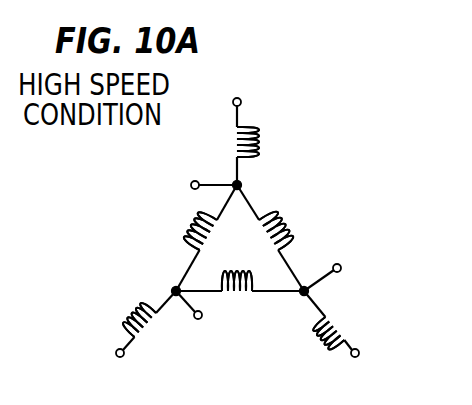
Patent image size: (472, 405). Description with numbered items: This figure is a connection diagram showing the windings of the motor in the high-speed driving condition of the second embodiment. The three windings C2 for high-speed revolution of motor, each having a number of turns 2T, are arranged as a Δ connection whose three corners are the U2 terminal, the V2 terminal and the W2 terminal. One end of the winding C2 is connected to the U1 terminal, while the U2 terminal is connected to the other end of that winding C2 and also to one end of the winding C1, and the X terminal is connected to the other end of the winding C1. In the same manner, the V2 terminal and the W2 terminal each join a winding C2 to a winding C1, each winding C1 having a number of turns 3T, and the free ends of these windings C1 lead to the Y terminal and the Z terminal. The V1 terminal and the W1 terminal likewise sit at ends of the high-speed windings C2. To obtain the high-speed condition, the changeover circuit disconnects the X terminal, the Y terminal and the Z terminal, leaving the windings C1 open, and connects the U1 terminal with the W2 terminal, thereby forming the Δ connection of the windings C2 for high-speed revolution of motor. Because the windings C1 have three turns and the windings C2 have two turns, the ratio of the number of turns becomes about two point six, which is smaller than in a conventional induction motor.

The winding C1 is at (217, 240).
The winding for high-speed revolution of motor C2 is at (237, 269).
The number of turns of winding C1 3T is at (246, 240).
The number of turns of winding for high-speed revolution of motor 2T is at (238, 252).
The Z terminal Z is at (237, 87).
The X terminal X is at (118, 370).
The Y terminal Y is at (365, 370).
The U1 terminal U1 is at (198, 185).
The V1 terminal V1 is at (195, 322).
The W1 terminal W1 is at (339, 268).
The U2 terminal U2 is at (159, 279).
The V2 terminal V2 is at (324, 301).
The W2 terminal W2 is at (258, 185).